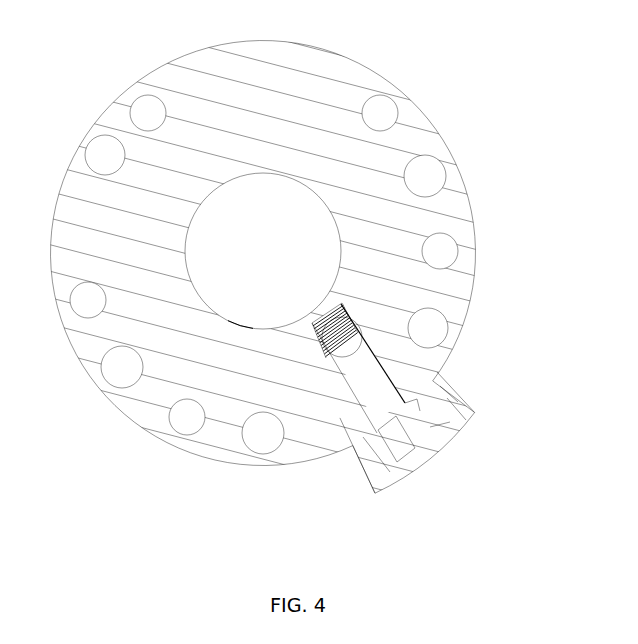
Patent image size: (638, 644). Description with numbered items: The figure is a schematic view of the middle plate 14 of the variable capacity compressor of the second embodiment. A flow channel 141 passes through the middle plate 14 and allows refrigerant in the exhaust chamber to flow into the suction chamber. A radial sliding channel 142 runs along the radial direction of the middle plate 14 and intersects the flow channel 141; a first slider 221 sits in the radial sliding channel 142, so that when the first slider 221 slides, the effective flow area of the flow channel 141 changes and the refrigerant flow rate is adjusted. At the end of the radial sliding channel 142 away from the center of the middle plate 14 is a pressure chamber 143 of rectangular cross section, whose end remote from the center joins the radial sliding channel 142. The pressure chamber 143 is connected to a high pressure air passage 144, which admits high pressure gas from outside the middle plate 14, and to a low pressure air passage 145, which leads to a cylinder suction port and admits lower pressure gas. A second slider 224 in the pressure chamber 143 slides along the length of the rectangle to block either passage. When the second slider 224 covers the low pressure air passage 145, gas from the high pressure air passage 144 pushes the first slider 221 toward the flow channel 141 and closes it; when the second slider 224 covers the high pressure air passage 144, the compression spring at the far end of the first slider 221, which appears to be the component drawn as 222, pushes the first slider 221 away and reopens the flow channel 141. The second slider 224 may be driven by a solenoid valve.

The middle plate 14 is at (207, 63).
The flow channel 141 is at (333, 352).
The radial sliding channel 142 is at (440, 386).
The pressure chamber 143 is at (447, 398).
The high pressure air passage 144 is at (450, 422).
The low pressure air passage 145 is at (386, 489).
The first slider 221 is at (440, 372).
The fastening bolt 222 is at (330, 315).
The second slider 224 is at (437, 465).